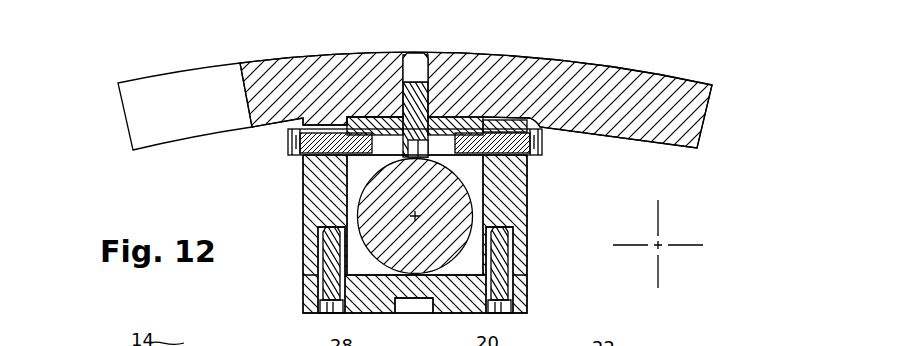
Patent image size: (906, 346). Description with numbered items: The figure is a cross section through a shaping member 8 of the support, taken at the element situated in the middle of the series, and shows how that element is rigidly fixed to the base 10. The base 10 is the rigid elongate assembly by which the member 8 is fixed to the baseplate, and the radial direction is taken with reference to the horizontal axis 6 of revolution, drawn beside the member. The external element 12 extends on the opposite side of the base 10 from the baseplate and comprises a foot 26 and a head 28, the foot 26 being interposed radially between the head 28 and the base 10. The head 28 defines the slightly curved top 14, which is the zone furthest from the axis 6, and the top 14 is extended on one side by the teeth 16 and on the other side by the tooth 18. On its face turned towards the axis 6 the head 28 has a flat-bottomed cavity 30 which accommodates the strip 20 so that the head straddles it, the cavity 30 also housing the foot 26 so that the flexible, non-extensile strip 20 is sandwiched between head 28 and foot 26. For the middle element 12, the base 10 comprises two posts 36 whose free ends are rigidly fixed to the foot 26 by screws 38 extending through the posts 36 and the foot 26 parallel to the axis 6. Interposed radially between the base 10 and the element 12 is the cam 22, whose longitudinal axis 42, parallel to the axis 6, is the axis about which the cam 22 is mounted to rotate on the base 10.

The axis 6 is at (661, 245).
The shaping member 8 is at (724, 129).
The base 10 is at (523, 283).
The external element 12 is at (640, 71).
The top 14 is at (300, 52).
The tooth 16 is at (157, 112).
The tooth 18 is at (690, 96).
The strip 20 is at (452, 112).
The cam 22 is at (458, 215).
The foot 26 is at (472, 129).
The head 28 is at (375, 86).
The cavity 30 is at (415, 270).
The post 36 is at (330, 183).
The screw 38 is at (327, 150).
The longitudinal axis 42 is at (417, 218).